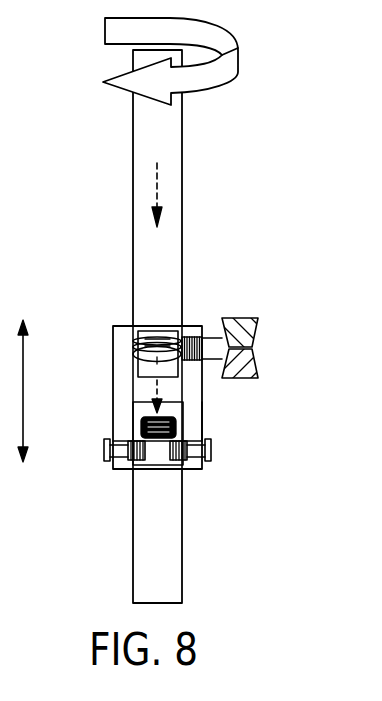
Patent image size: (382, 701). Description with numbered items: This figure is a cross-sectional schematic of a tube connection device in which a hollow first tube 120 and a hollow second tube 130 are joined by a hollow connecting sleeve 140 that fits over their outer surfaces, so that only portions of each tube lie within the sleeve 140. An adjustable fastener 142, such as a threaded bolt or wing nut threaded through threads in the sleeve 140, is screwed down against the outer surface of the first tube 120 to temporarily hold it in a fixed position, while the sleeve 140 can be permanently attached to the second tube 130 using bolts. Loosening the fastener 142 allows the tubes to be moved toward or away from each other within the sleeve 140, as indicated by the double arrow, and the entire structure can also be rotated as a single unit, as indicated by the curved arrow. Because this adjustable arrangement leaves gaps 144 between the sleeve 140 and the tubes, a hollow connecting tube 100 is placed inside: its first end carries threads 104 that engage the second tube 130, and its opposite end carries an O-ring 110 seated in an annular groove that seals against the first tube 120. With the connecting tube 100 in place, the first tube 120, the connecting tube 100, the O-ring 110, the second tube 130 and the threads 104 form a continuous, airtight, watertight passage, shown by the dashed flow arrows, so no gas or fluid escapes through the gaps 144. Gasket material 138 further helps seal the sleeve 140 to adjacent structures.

The connecting tube 100 is at (137, 398).
The threads 104 is at (177, 422).
The O-ring 110 is at (137, 345).
The first tube 120 is at (133, 200).
The second tube 130 is at (133, 523).
The gasket material 138 is at (195, 411).
The connecting sleeve 140 is at (113, 382).
The adjustable fastener 142 is at (252, 347).
The gaps 144 is at (196, 316).